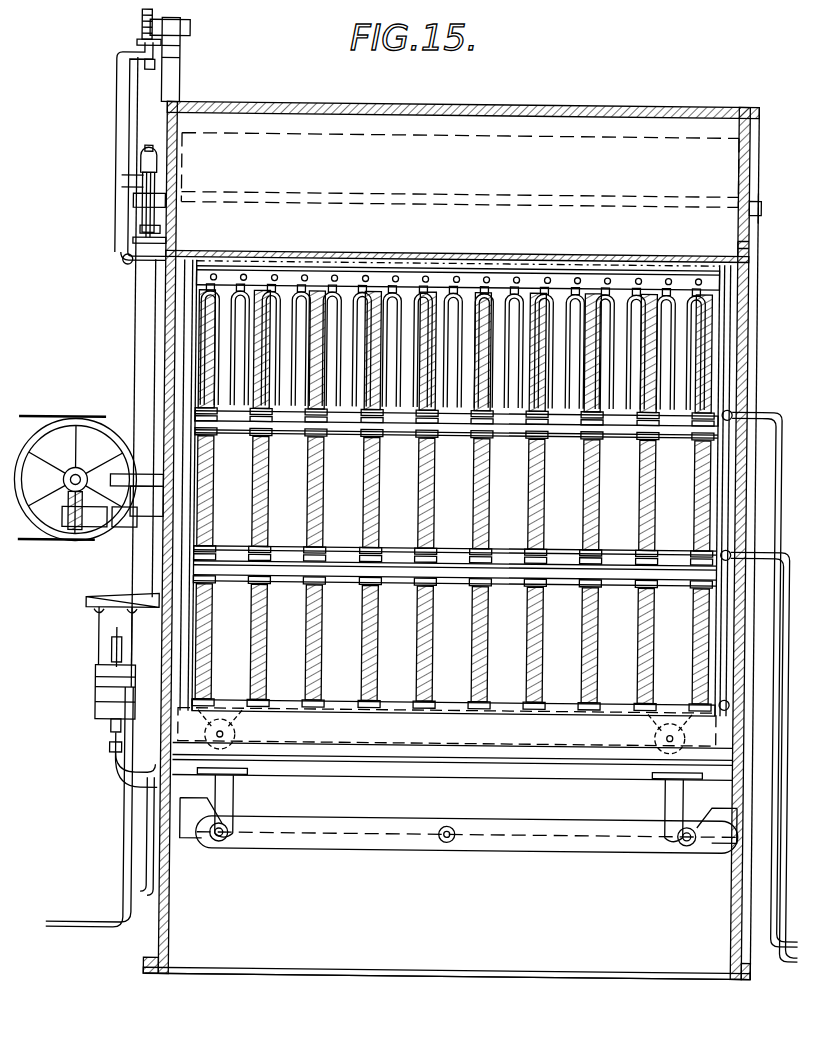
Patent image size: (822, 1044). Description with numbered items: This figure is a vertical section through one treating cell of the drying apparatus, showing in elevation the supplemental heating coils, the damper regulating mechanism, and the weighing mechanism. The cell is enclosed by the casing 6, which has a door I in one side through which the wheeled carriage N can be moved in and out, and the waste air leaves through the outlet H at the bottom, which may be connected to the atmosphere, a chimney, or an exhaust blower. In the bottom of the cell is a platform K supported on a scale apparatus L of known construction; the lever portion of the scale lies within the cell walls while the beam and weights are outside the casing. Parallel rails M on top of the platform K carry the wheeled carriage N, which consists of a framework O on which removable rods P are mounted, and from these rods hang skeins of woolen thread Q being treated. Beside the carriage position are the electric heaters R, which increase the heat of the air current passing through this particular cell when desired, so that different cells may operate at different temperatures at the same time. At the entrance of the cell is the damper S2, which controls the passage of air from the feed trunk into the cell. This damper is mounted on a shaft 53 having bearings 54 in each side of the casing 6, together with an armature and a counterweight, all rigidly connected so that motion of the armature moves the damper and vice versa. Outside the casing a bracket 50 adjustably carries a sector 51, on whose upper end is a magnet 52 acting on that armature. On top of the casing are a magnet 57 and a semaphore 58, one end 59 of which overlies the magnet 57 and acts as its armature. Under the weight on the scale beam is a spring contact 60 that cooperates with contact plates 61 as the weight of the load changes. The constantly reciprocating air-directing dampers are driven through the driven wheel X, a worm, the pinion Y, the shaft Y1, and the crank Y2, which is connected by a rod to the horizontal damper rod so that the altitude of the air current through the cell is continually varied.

The casing 6 is at (163, 326).
The damper S2 is at (262, 134).
The door I is at (748, 346).
The outlet H is at (295, 977).
The framework O is at (190, 380).
The removable rods P is at (354, 284).
The skeins of woolen thread Q is at (294, 292).
The electric heaters R is at (480, 484).
The wheeled carriage N is at (447, 731).
The parallel rails M is at (374, 755).
The platform K is at (500, 778).
The scale apparatus L is at (265, 852).
The driven wheel X is at (66, 430).
The pinion Y is at (72, 535).
The shaft Y1 is at (155, 478).
The crank Y2 is at (125, 530).
The spring contact 60 is at (110, 735).
The contact plates 61 is at (112, 748).
The semaphore 58 is at (150, 15).
The end of semaphore 59 is at (137, 25).
The magnet 57 is at (135, 44).
The magnet 52 is at (145, 160).
The sector 51 is at (140, 225).
The bracket 50 is at (130, 246).
The shaft 53 is at (758, 205).
The bearings 54 is at (756, 206).